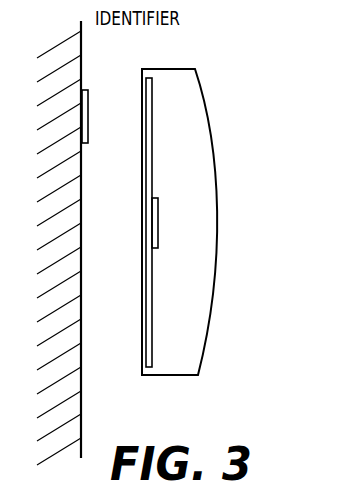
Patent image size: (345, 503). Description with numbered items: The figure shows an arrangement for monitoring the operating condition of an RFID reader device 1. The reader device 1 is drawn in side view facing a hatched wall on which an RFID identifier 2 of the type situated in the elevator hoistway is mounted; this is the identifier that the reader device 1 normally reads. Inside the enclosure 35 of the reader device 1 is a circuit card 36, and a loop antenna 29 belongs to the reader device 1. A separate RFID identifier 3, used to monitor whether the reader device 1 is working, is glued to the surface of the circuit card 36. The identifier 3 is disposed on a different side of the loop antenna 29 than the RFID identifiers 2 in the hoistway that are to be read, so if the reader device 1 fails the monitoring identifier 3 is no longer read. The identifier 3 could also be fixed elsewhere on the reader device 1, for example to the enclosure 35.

The RFID reader device 1 is at (221, 217).
The RFID identifier 2 is at (88, 104).
The RFID identifier 3 is at (158, 223).
The loop antenna 29 is at (142, 333).
The enclosure 35 is at (218, 241).
The circuit card 36 is at (152, 338).